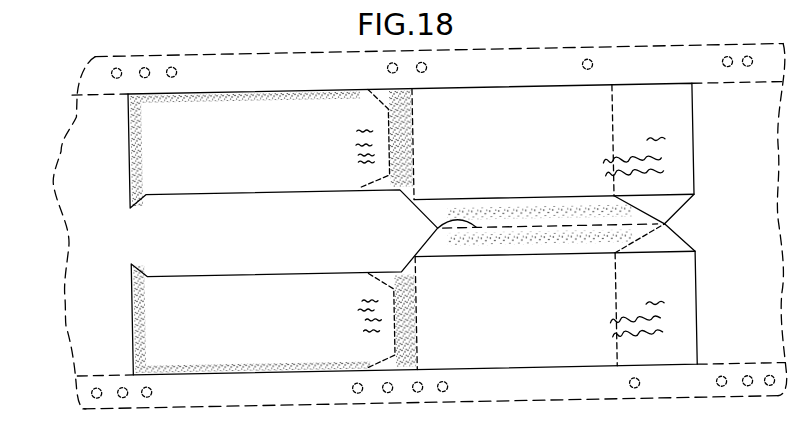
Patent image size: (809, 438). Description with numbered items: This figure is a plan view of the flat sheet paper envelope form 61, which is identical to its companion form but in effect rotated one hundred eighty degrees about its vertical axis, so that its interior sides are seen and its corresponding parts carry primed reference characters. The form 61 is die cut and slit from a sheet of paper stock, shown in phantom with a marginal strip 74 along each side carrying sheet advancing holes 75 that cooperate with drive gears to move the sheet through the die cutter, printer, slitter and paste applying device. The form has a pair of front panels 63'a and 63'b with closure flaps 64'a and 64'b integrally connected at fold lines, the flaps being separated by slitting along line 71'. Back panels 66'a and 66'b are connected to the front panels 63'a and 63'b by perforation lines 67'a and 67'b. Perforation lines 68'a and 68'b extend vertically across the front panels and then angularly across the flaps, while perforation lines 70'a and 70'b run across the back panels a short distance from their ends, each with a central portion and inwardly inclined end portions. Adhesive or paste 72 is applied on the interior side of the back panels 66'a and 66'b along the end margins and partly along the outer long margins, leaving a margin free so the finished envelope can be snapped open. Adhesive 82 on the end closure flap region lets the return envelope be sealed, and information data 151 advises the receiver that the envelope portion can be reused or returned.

The envelope form 61 is at (124, 143).
The marginal strip 74 is at (562, 71).
The sheet advancing holes 75 is at (120, 68).
The adhesive or paste 72 is at (210, 105).
The back panel 66'a is at (264, 148).
The back panel 66'b is at (267, 317).
The front panel 63'a is at (553, 155).
The front panel 63'b is at (556, 296).
The closure flap 64'a is at (539, 189).
The closure flap 64'b is at (541, 260).
The perforation line 67'a is at (447, 143).
The perforation line 67'b is at (448, 312).
The perforation line 68'a is at (644, 140).
The perforation line 68'b is at (653, 308).
The perforation line 70'a is at (358, 138).
The perforation line 70'b is at (358, 320).
The slitting line 71' is at (513, 219).
The adhesive 82 is at (377, 140).
The information data 151 is at (354, 147).